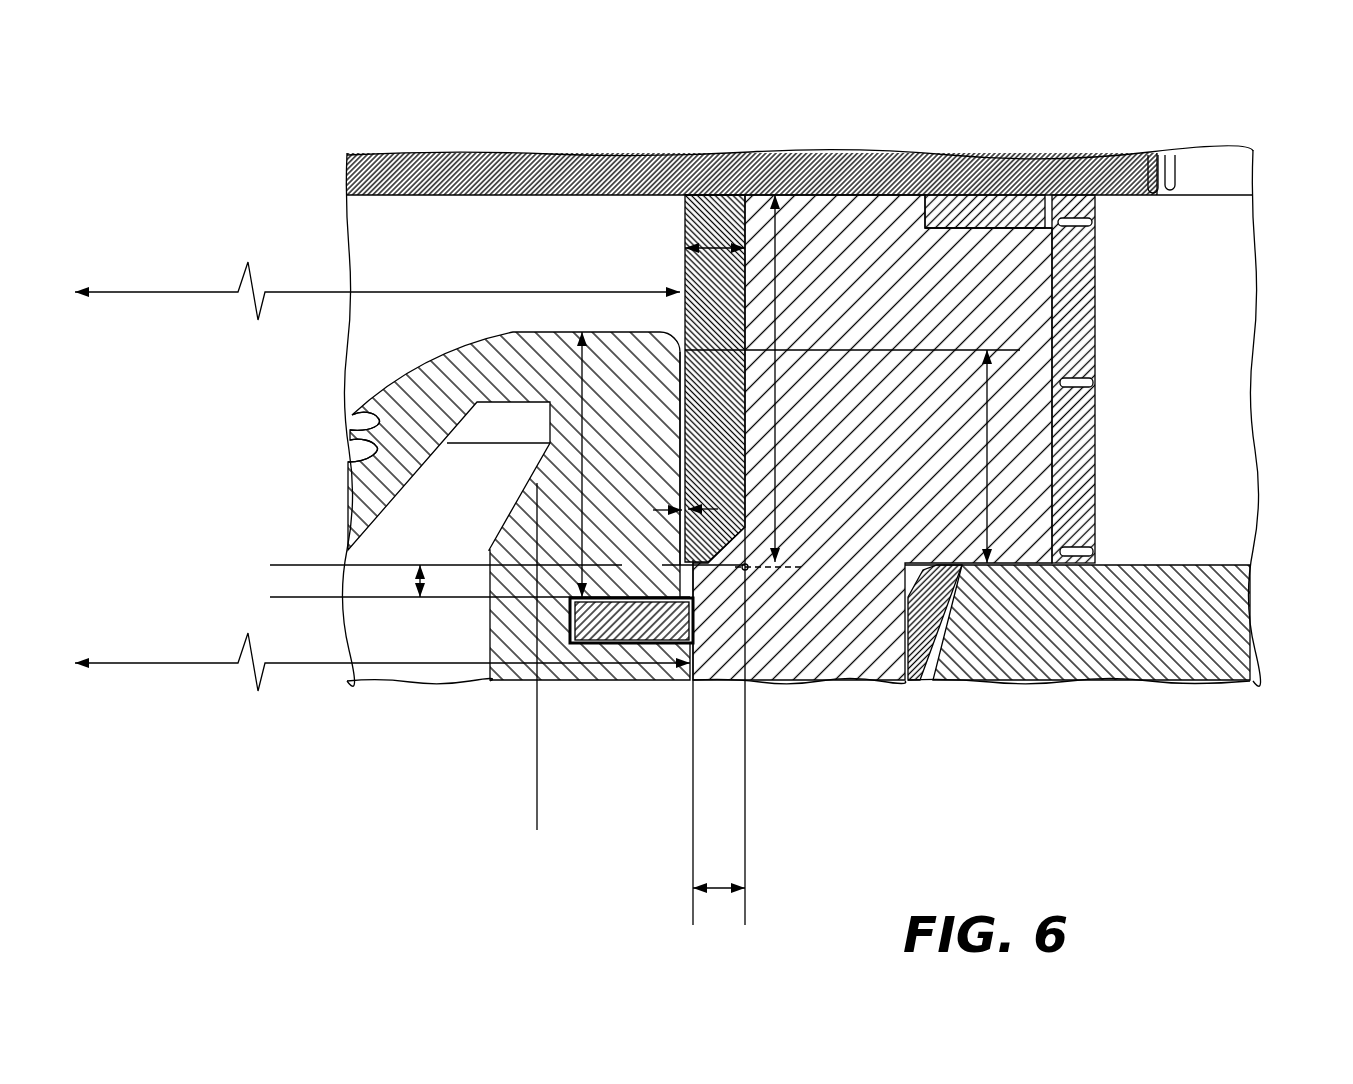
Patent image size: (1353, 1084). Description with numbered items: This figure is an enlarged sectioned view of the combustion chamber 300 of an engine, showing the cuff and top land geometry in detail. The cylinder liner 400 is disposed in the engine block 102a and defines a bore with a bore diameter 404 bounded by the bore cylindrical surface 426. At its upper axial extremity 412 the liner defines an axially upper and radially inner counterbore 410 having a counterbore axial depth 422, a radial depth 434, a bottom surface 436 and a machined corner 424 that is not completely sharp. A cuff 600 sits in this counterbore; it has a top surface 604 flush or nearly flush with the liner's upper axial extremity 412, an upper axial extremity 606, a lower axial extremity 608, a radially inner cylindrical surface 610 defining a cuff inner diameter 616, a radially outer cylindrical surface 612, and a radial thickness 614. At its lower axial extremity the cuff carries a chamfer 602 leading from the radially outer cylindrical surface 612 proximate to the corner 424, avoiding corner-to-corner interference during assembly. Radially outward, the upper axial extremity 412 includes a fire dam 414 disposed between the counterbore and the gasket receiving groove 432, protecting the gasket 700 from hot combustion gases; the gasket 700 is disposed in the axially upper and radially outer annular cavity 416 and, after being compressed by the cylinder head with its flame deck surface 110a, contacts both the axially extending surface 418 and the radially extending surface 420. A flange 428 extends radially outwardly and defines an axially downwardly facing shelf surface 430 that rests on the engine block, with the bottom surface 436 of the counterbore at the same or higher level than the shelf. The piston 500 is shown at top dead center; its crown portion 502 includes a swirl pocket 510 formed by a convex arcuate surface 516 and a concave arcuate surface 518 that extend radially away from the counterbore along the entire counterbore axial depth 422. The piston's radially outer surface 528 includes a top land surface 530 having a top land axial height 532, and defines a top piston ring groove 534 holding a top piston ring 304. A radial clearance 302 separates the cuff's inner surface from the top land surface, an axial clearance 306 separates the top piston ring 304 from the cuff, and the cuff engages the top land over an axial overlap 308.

The combustion chamber 300 is at (437, 148).
The flame deck surface 110a is at (633, 195).
The cuff 600 is at (518, 262).
The radial thickness 614 is at (684, 210).
The top surface 604 is at (708, 195).
The upper axial extremity 606 is at (728, 190).
The upper axial extremity 412 is at (803, 190).
The axially upper and radially inner counterbore 410 is at (742, 418).
The fire dam 414 is at (872, 205).
The radially extending surface 420 is at (926, 210).
The axially extending surface 418 is at (960, 238).
The gasket 700 is at (1000, 210).
The gasket receiving groove 432 is at (1055, 211).
The axially upper and radially outer annular cavity 416 is at (980, 233).
The axial overlap 308 is at (988, 425).
The cylinder liner 400 is at (1008, 477).
The flange 428 is at (1042, 520).
The engine block 102a is at (1198, 640).
The axially downwardly facing shelf surface 430 is at (1045, 566).
The cuff inner diameter 616 is at (150, 298).
The bore diameter 404 is at (148, 667).
The crown portion 502 is at (382, 355).
The swirl pocket 510 is at (355, 383).
The convex arcuate surface 516 is at (374, 422).
The concave arcuate surface 518 is at (366, 441).
The radially outer surface 528 is at (678, 372).
The top land surface 530 is at (680, 404).
The radially inner cylindrical surface 610 is at (653, 512).
The radial clearance 302 is at (537, 569).
The axial clearance 306 is at (418, 580).
The top land axial height 532 is at (580, 538).
The top piston ring 304 is at (585, 617).
The piston 500 is at (540, 690).
The top piston ring groove 534 is at (613, 654).
The bore cylindrical surface 426 is at (688, 665).
The lower axial extremity 608 is at (703, 572).
The corner 424 is at (746, 570).
The bottom surface 436 is at (723, 565).
The chamfer 602 is at (734, 543).
The radially outer cylindrical surface 612 is at (744, 530).
The counterbore axial depth 422 is at (762, 470).
The radial depth 434 is at (716, 893).